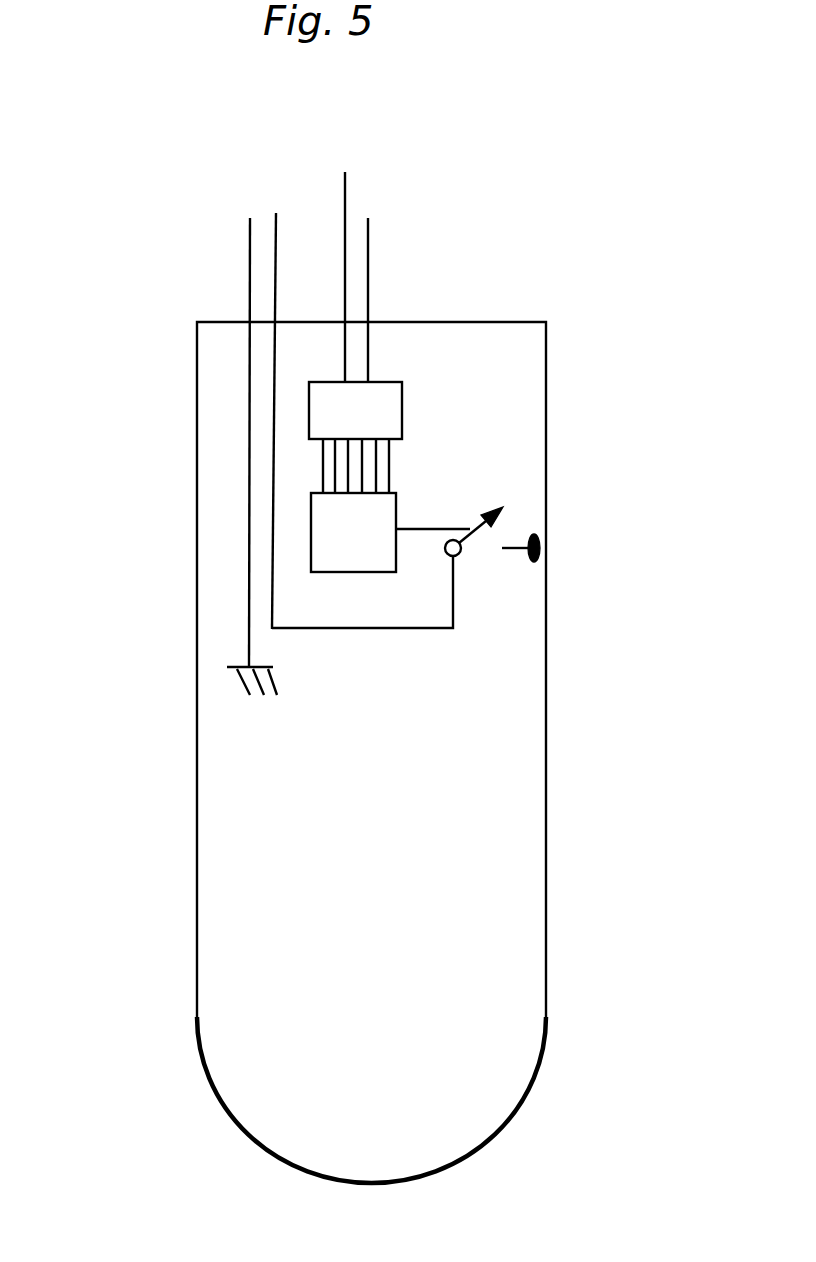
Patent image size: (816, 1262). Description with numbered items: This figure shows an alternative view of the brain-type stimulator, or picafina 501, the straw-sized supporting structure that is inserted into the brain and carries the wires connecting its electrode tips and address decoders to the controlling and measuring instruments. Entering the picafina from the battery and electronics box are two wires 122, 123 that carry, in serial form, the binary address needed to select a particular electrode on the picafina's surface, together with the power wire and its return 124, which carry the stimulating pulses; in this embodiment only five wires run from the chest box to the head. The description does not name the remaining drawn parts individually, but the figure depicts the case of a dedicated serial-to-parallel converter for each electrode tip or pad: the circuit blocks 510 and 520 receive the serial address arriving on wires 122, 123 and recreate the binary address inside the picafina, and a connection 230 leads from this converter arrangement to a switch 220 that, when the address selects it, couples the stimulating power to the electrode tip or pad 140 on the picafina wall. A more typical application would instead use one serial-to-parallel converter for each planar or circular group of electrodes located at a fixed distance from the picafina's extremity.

The housing 501 is at (532, 1100).
The wire 122 is at (360, 168).
The wire 123 is at (387, 208).
The power wire and its return 124 is at (215, 214).
The sensor circuit 510 is at (390, 365).
The control circuit 520 is at (403, 457).
The switch wiring 230 is at (403, 502).
The switch 220 is at (483, 500).
The indicator 140 is at (557, 535).